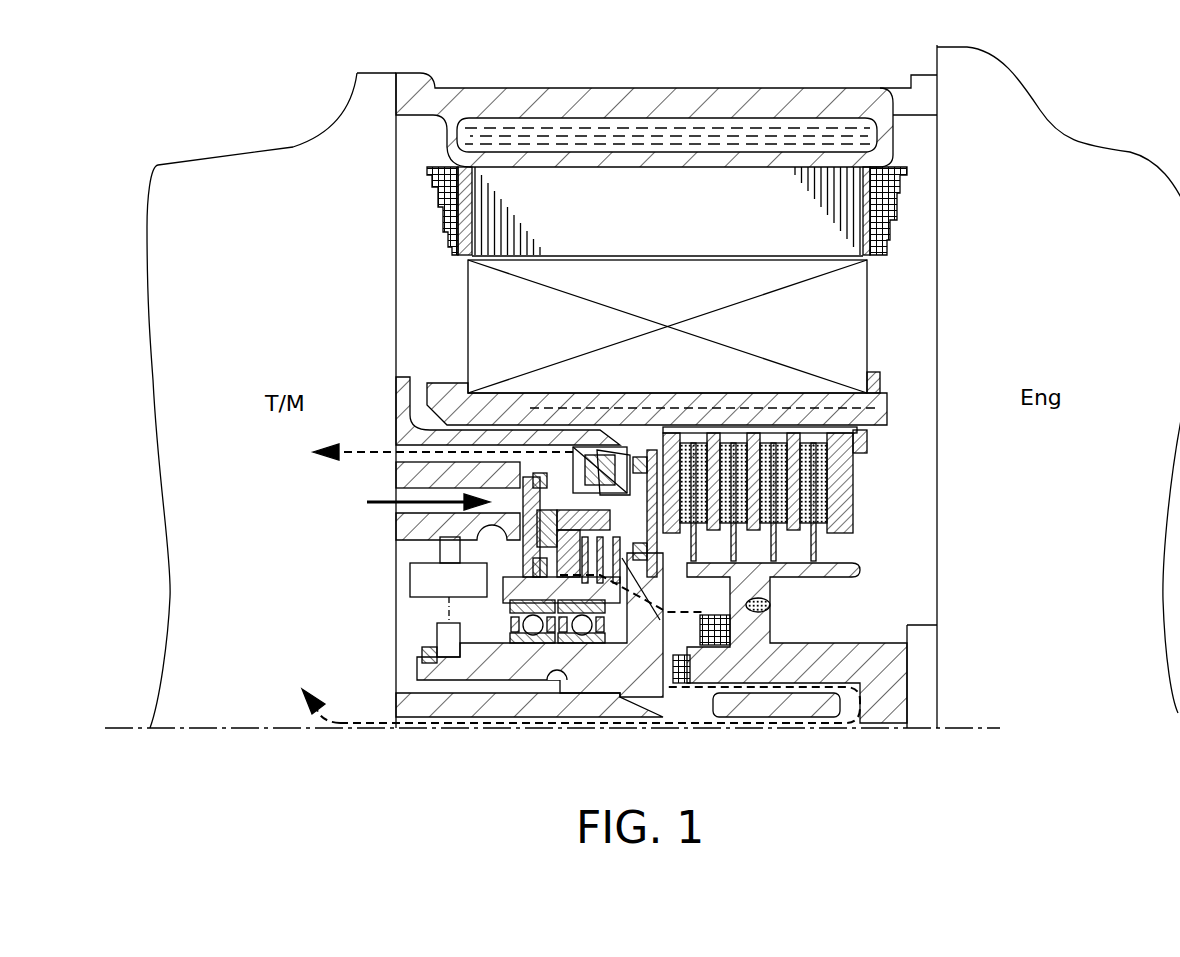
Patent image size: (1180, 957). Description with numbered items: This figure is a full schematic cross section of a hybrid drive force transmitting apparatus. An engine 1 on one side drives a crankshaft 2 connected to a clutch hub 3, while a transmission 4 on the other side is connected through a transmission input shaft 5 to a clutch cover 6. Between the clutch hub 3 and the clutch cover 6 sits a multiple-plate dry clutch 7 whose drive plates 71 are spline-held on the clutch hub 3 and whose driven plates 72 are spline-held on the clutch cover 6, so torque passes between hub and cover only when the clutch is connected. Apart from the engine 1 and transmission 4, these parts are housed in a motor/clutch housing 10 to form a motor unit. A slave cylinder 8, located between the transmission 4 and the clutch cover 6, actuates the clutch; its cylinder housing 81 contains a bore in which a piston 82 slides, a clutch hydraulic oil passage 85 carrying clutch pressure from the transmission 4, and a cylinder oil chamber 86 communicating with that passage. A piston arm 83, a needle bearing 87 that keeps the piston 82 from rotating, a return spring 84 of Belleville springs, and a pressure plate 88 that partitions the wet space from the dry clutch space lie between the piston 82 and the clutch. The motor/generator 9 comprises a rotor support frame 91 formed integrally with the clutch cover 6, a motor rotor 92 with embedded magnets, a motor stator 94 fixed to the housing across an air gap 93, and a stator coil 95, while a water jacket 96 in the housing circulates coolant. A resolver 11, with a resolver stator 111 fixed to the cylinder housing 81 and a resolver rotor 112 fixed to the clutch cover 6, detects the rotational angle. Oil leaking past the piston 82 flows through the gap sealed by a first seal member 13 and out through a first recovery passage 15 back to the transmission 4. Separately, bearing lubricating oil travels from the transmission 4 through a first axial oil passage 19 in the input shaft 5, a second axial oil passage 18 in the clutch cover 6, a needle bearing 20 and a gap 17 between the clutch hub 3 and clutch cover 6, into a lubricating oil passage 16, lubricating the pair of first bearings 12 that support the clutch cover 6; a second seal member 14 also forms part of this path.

The engine 1 is at (1045, 153).
The crankshaft 2 is at (927, 715).
The clutch hub 3 is at (843, 627).
The transmission 4 is at (205, 190).
The transmission input shaft 5 is at (460, 708).
The clutch cover 6 is at (635, 708).
The multiple-plate dry clutch 7 is at (831, 494).
The slave cylinder 8 is at (421, 529).
The motor/generator 9 is at (714, 296).
The motor/clutch housing 10 is at (666, 372).
The resolver 11 is at (382, 616).
The first bearings 12 is at (533, 627).
The first seal member 13 is at (590, 462).
The second seal member 14 is at (738, 631).
The first recovery passage 15 is at (394, 450).
The lubricating oil passage 16 is at (752, 603).
The gap 17 is at (808, 690).
The second axial oil passage 18 is at (773, 722).
The first axial oil passage 19 is at (416, 724).
The needle bearing 20 is at (692, 672).
The drive plates 71 is at (820, 538).
The driven plates 72 is at (792, 466).
The cylinder housing 81 is at (410, 479).
The piston 82 is at (415, 560).
The piston arm 83 is at (560, 465).
The return spring 84 is at (622, 560).
The clutch hydraulic oil passage 85 is at (400, 505).
The cylinder oil chamber 86 is at (497, 475).
The needle bearing 87 is at (525, 470).
The pressure plate 88 is at (628, 462).
The rotor support frame 91 is at (882, 392).
The motor rotor 92 is at (840, 330).
The air gap 93 is at (655, 258).
The motor stator 94 is at (818, 222).
The stator coil 95 is at (893, 195).
The water jacket 96 is at (770, 128).
The resolver stator 111 is at (420, 597).
The resolver rotor 112 is at (422, 648).